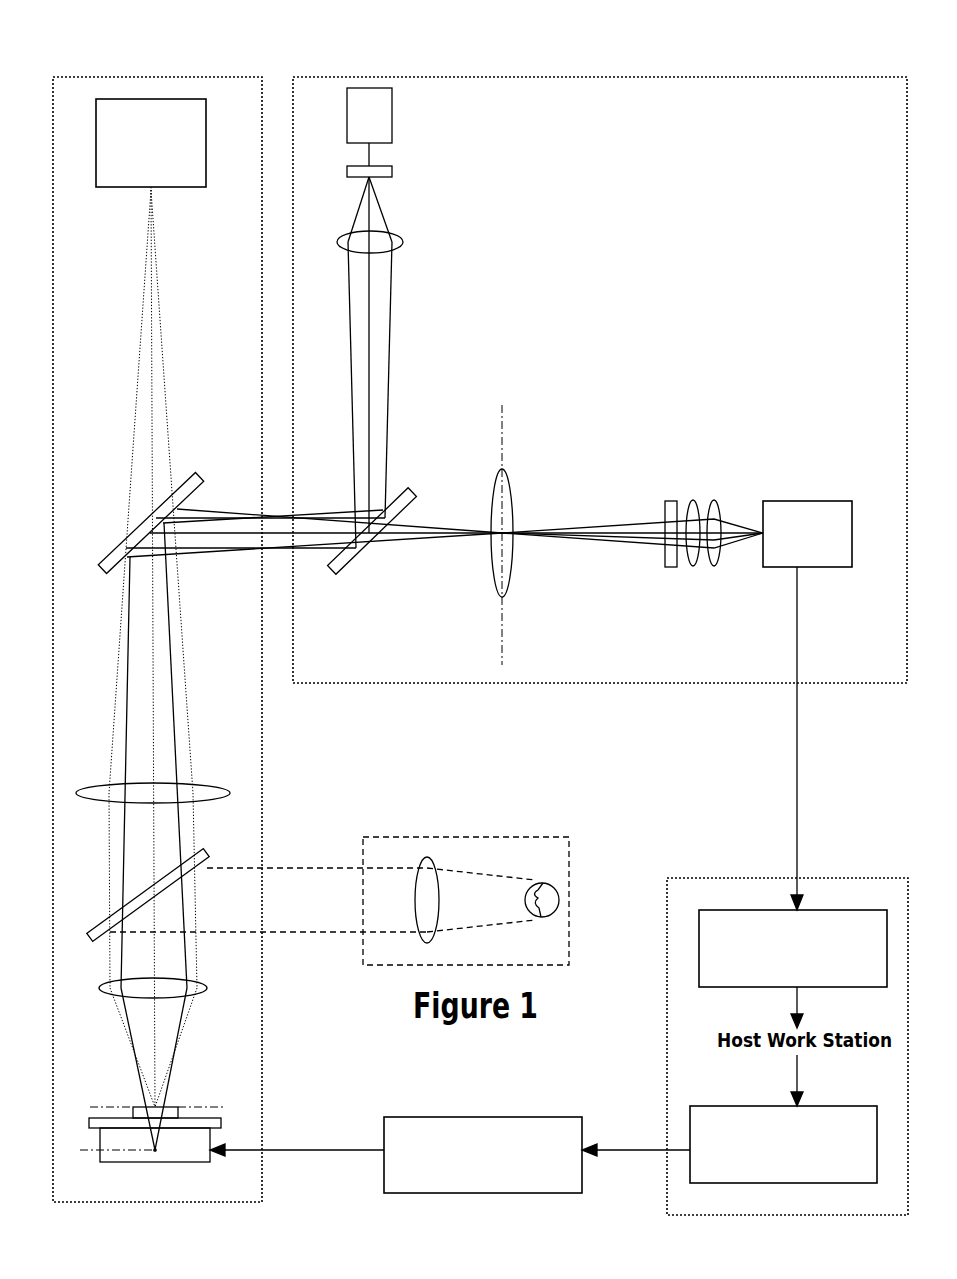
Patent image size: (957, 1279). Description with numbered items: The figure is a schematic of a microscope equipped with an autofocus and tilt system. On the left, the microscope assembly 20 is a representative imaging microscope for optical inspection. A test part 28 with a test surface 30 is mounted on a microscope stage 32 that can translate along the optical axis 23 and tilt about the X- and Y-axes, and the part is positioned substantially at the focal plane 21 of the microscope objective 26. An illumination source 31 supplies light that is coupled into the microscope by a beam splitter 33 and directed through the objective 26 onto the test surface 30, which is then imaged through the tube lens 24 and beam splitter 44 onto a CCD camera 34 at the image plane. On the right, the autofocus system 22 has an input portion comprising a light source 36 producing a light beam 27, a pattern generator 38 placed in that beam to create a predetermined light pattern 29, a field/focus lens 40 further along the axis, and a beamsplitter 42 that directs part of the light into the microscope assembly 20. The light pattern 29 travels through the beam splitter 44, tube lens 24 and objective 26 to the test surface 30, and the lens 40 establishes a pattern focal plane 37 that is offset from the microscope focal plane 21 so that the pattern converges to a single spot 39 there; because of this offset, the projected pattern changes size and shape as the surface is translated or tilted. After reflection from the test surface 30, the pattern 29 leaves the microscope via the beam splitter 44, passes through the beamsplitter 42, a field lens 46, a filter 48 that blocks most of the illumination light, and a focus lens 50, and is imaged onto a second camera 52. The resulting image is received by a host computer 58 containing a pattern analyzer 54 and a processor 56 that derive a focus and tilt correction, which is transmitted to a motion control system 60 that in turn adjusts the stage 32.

The microscope assembly 20 is at (178, 60).
The focal plane 21 is at (92, 1107).
The autofocus system 22 is at (596, 60).
The optical axis 23 is at (155, 1020).
The tube lens 24 is at (220, 793).
The microscope objective 26 is at (187, 977).
The light beam 27 is at (369, 156).
The test part 28 is at (190, 1107).
The light pattern 29 is at (371, 198).
The test surface 30 is at (155, 1107).
The illumination source 31 is at (503, 837).
The microscope stage 32 is at (198, 1150).
The beam splitter 33 is at (208, 857).
The CCD camera 34 is at (172, 187).
The light source 36 is at (392, 117).
The pattern focal plane 37 is at (92, 1150).
The pattern generator 38 is at (392, 166).
The focal point 39 is at (155, 1150).
The field/focus lens 40 is at (402, 242).
The beamsplitter 42 is at (348, 567).
The beam splitter 44 is at (124, 543).
The field lens 46 is at (512, 566).
The filter 48 is at (665, 567).
The focus lens 50 is at (712, 555).
The second camera 52 is at (822, 567).
The pattern analyzer 54 is at (745, 910).
The processor 56 is at (722, 1106).
The host computer 58 is at (808, 878).
The motion control system 60 is at (418, 1117).